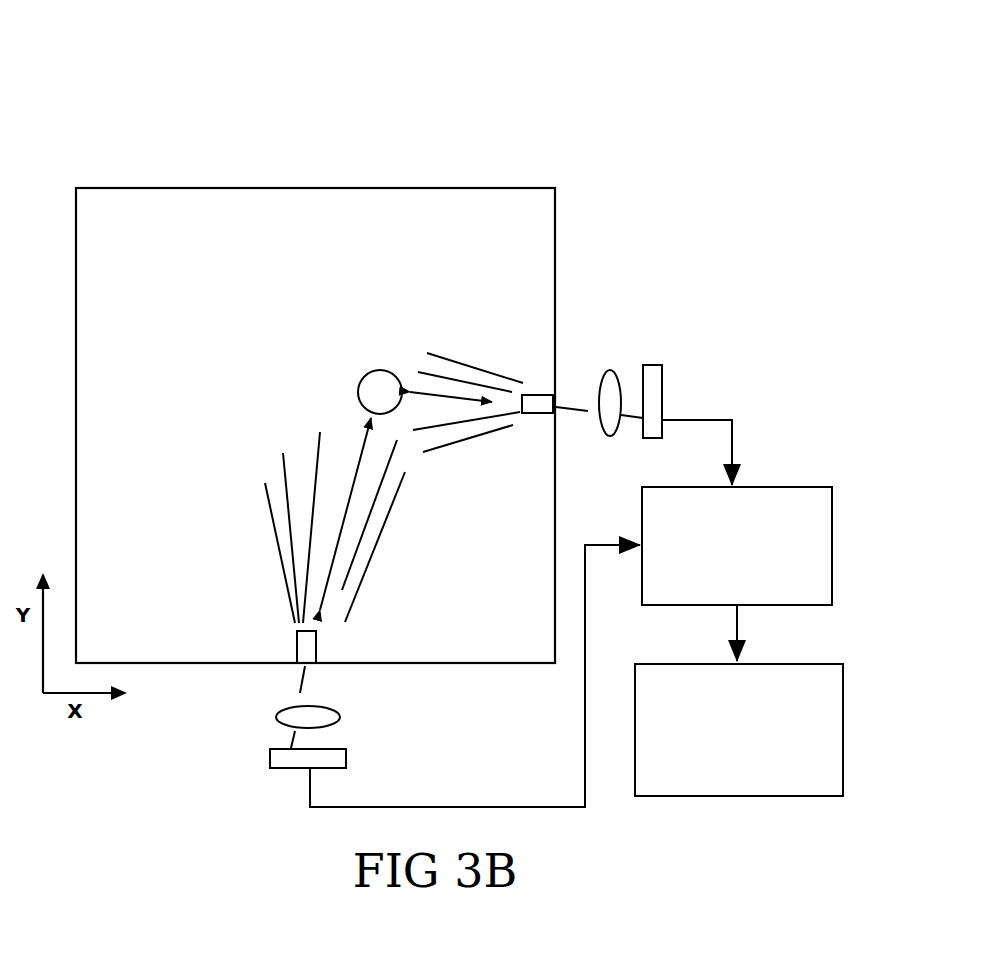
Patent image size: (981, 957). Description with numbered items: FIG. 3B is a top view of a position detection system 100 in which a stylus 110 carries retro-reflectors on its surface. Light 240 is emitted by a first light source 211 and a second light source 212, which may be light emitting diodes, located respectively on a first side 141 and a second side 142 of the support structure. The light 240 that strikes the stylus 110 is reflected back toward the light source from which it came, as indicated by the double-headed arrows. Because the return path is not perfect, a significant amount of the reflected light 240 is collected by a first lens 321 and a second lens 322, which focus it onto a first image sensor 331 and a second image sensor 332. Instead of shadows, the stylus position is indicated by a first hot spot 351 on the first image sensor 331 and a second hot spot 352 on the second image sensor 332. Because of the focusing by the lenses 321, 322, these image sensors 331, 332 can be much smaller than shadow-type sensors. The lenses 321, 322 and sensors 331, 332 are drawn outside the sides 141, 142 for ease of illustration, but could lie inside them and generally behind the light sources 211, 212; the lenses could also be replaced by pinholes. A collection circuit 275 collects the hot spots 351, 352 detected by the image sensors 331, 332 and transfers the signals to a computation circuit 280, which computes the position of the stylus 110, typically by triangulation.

The position detection system 100 is at (568, 127).
The second side 142 is at (555, 238).
The first side 141 is at (155, 663).
The stylus 110 is at (372, 370).
The second light source 212 is at (538, 415).
The first light source 211 is at (316, 650).
The light 240 is at (461, 347).
The second lens 322 is at (610, 436).
The second image sensor 332 is at (648, 365).
The second hot spot 352 is at (640, 428).
The first lens 321 is at (341, 715).
The first image sensor 331 is at (346, 758).
The first hot spot 351 is at (282, 746).
The collection circuit 275 is at (780, 605).
The computation circuit 280 is at (754, 796).